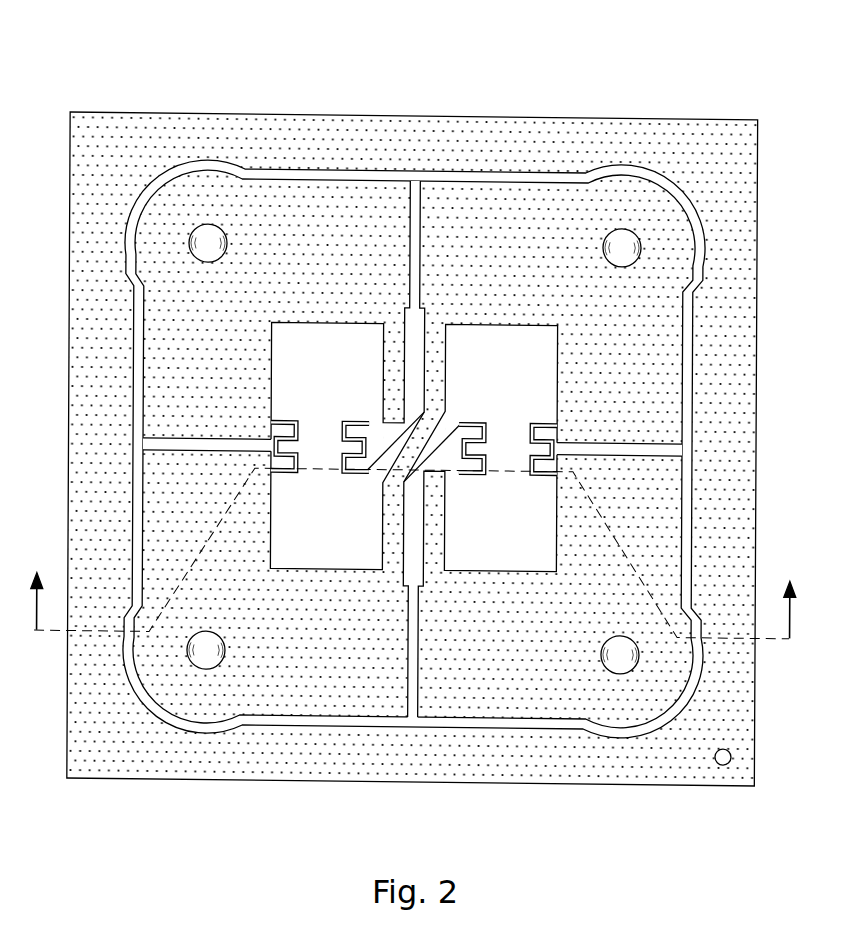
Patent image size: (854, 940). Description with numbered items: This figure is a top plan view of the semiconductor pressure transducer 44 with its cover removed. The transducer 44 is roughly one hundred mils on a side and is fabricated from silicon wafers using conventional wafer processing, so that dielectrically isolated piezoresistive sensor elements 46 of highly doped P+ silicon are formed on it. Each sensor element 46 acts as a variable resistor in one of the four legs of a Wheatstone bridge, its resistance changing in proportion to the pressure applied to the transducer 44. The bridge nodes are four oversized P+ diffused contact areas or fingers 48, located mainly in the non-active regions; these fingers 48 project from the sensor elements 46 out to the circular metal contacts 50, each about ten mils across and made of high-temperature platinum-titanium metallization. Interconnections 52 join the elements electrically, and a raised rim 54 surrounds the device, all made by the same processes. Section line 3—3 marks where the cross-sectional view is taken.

The semiconductor sensor 44 is at (416, 452).
The piezoresistive sensor element 46 is at (356, 478).
The electrical contact area (finger) 48 is at (297, 212).
The metal contact 50 is at (190, 243).
The interconnection 52 is at (383, 362).
The raised rim 54 is at (386, 766).
The section line 3— 3 is at (414, 552).